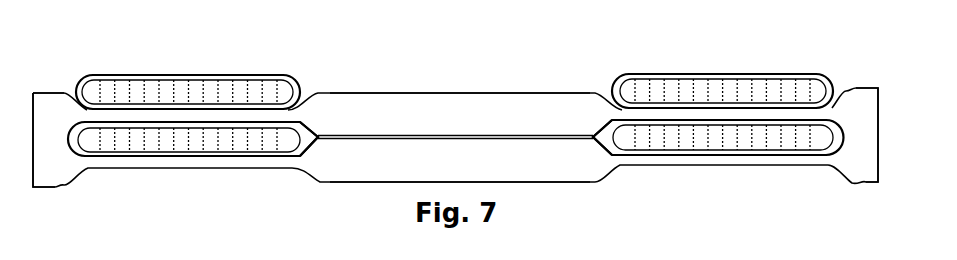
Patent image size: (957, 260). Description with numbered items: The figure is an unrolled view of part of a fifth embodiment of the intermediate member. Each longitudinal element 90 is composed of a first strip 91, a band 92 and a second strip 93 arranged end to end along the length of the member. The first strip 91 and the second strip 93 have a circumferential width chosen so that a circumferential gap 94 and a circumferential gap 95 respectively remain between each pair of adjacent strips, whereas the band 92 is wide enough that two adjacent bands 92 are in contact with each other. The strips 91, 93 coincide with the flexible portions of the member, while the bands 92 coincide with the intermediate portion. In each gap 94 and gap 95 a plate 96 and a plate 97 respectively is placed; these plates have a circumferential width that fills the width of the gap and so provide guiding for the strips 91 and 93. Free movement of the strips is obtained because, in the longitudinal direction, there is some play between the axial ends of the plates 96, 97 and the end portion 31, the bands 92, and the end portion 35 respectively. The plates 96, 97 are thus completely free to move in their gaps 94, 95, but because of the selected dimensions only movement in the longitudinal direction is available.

The portion 31 is at (50, 108).
The portion 35 is at (858, 106).
The longitudinal element 90 is at (468, 92).
The first strip 91 is at (207, 118).
The band 92 is at (517, 103).
The second strip 93 is at (712, 116).
The circumferential gap 94 is at (305, 142).
The circumferential gap 95 is at (603, 138).
The plate 96 is at (200, 140).
The plate 97 is at (732, 140).